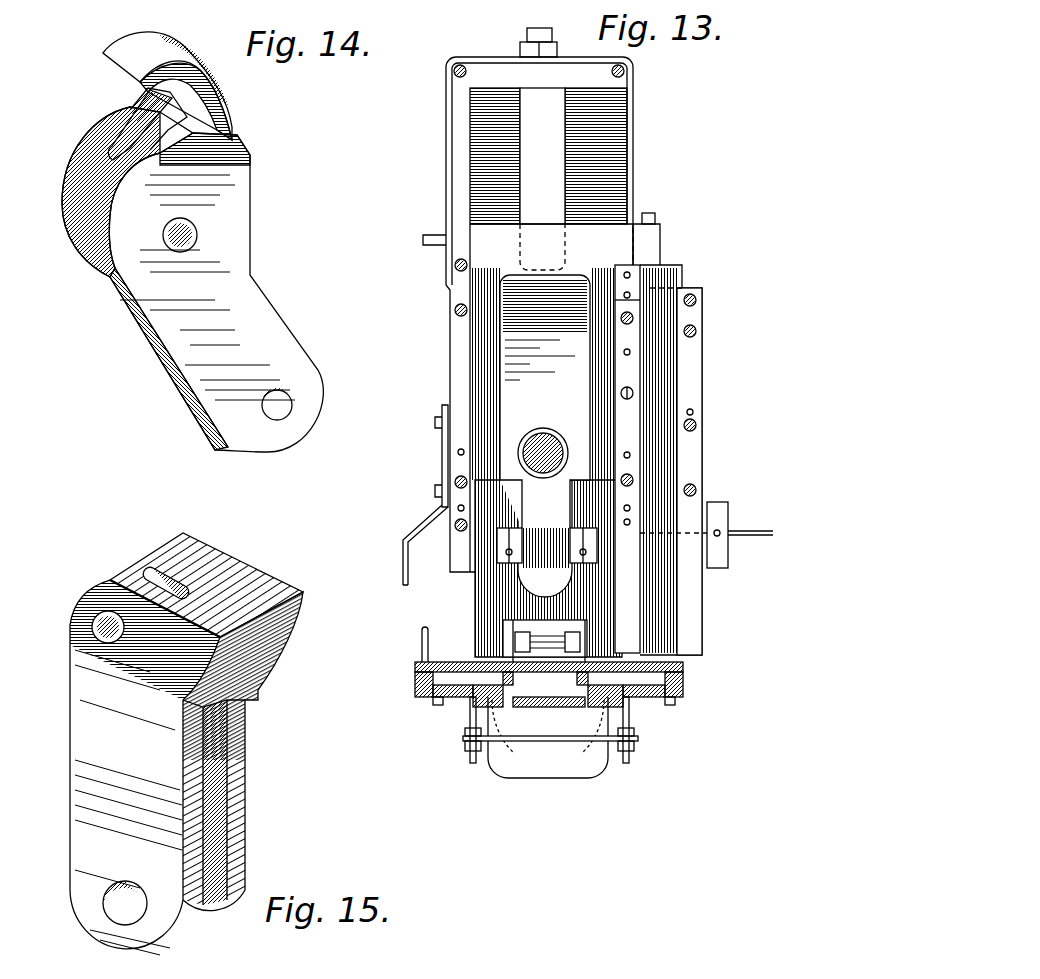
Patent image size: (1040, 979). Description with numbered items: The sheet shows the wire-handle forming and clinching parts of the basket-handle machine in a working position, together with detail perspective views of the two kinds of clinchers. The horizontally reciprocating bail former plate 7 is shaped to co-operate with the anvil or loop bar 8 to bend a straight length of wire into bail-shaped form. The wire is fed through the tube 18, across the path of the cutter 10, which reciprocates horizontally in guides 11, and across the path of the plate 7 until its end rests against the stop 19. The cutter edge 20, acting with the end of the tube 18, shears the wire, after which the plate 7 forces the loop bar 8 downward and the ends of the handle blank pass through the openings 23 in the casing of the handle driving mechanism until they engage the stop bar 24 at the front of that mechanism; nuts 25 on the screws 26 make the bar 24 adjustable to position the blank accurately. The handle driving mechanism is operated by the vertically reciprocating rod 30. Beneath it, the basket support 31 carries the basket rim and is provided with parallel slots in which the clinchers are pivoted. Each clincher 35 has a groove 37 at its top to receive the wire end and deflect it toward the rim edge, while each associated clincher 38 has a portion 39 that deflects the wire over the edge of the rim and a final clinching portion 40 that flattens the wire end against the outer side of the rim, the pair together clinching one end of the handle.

In FIG. 13, the bail former plate 7 is at (600, 418).
In FIG. 13, the loop bar 8 is at (548, 552).
In FIG. 13, the cutter 10 is at (665, 312).
In FIG. 13, the guides 11 is at (627, 368).
In FIG. 13, the tube 18 is at (738, 540).
In FIG. 13, the stop 19 is at (403, 577).
In FIG. 13, the cutter edge 20 is at (685, 655).
In FIG. 13, the openings 23 is at (490, 670).
In FIG. 13, the stop bar 24 is at (535, 745).
In FIG. 13, the nuts 25 is at (465, 750).
In FIG. 13, the screws 26 is at (472, 764).
In FIG. 13, the vertically reciprocating rod 30 is at (548, 452).
In FIG. 13, the basket support 31 is at (590, 770).
In FIG. 15, the clincher 35 is at (150, 788).
In FIG. 15, the groove 37 is at (176, 586).
In FIG. 14, the clincher 38 is at (245, 314).
In FIG. 13, the clincher 38 is at (572, 637).
In FIG. 14, the deflecting portion 39 is at (110, 170).
In FIG. 14, the final clinching portion 40 is at (148, 93).